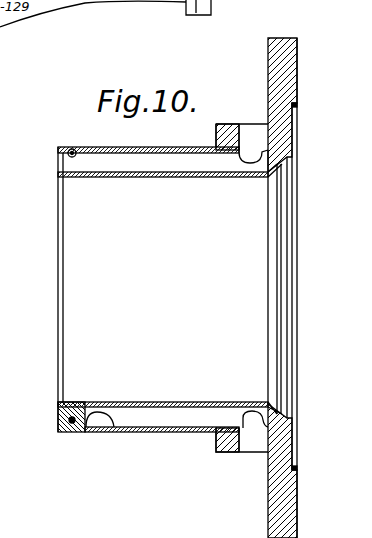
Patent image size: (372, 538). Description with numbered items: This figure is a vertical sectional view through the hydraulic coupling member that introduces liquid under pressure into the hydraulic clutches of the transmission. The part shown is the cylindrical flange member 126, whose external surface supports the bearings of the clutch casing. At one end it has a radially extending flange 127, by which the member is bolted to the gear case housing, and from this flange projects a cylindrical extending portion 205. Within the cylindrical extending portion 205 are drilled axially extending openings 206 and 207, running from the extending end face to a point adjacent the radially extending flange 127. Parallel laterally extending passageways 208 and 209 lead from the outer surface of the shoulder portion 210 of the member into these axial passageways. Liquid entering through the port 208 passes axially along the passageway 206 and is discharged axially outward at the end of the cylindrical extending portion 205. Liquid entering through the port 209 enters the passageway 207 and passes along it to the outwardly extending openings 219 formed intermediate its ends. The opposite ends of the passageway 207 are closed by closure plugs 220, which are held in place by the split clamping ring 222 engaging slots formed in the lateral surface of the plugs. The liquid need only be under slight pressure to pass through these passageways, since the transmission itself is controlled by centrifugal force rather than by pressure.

The radially extending flange 127 is at (276, 38).
The laterally extending passageway 208 is at (246, 132).
The cylindrical flange member 126 is at (128, 177).
The split clamping ring 222 is at (72, 149).
The axially extending opening 206 is at (203, 177).
The cylindrical extending portion 205 is at (151, 402).
The axially extending opening 207 is at (199, 415).
The closure plug 220 is at (58, 420).
The outwardly extending opening 219 is at (102, 428).
The shoulder portion 210 is at (215, 449).
The laterally extending passageway 209 is at (250, 449).